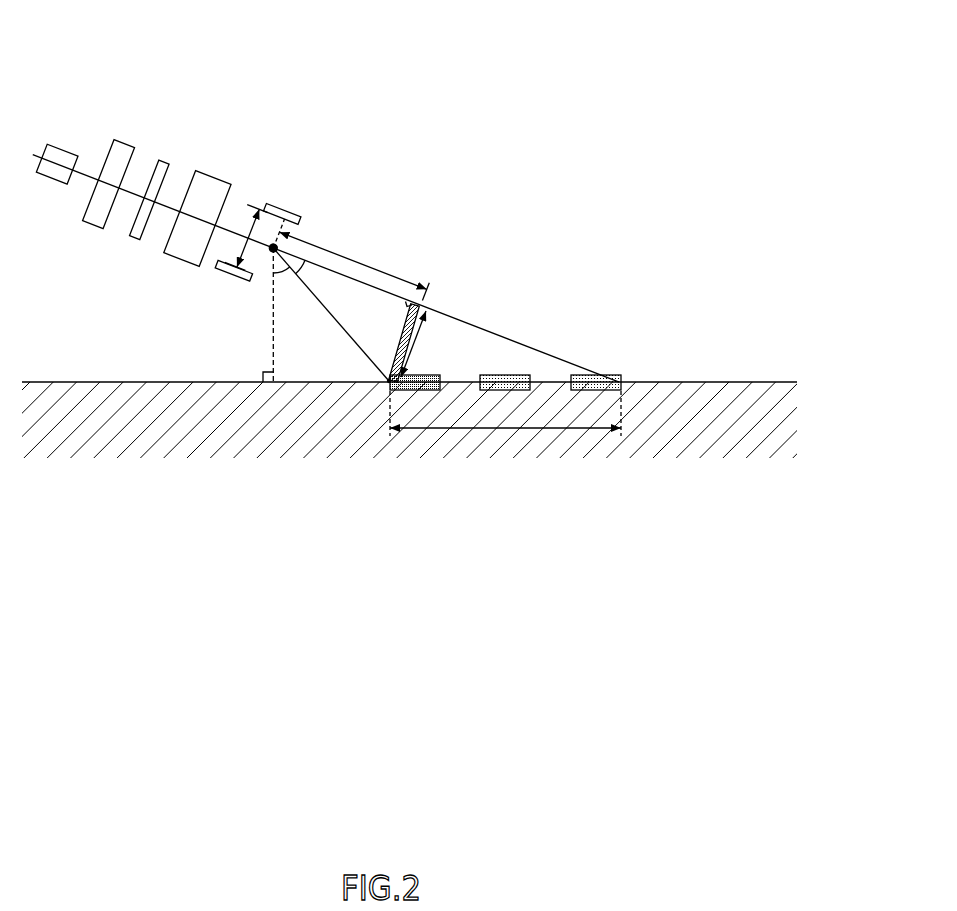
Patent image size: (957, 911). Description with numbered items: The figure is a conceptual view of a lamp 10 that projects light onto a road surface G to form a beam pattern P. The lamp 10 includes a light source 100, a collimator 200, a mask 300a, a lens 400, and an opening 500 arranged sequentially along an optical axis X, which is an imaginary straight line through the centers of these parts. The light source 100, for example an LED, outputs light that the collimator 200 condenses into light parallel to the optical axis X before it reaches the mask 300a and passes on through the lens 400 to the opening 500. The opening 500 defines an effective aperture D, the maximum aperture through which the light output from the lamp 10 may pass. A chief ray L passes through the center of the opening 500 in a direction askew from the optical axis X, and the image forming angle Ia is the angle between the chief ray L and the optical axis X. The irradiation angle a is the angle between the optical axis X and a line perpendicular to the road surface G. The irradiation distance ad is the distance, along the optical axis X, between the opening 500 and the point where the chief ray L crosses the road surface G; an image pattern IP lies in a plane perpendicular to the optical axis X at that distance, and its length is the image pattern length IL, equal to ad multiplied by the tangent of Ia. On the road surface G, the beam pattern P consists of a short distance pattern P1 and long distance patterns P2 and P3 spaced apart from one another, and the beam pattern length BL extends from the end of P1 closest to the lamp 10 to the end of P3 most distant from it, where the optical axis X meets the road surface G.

The lamp 10 is at (330, 198).
The light source 100 is at (64, 142).
The collimator 200 is at (127, 137).
The mask 300a is at (167, 155).
The lens 400 is at (217, 170).
The opening 500 is at (287, 203).
The effective aperture D is at (257, 207).
The irradiation distance ad is at (350, 263).
The irradiation angle a is at (283, 279).
The image forming angle Ia is at (314, 275).
The image pattern length IL is at (416, 350).
The optical axis X is at (505, 338).
The road surface G is at (722, 377).
The beam pattern length BL is at (505, 423).
The short distance pattern P1 is at (427, 391).
The long distance pattern P2 is at (508, 391).
The third beam pattern P3 is at (594, 432).
The beam pattern P is at (505, 456).
The chief ray L is at (327, 313).
The image pattern IP is at (395, 349).